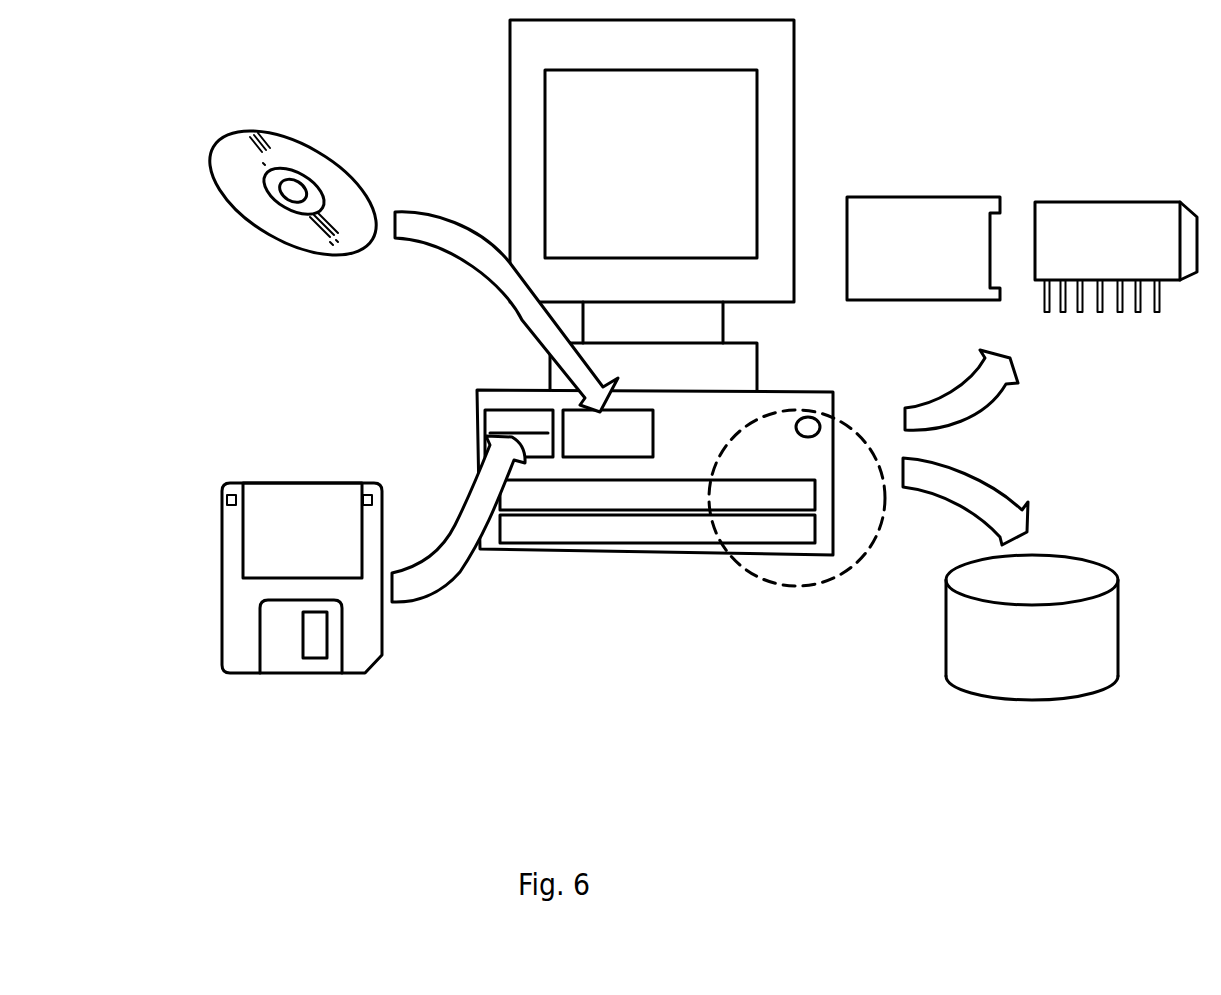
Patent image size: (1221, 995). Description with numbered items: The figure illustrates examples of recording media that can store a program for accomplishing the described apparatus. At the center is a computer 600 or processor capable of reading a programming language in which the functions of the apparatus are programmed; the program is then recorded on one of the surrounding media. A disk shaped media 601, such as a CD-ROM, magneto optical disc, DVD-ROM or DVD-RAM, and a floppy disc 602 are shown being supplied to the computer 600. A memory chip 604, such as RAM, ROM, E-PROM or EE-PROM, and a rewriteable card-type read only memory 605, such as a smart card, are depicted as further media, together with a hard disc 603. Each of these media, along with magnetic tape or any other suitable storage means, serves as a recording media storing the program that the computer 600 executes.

The computer 600 is at (510, 60).
The disk shaped media 601 is at (221, 143).
The floppy disc 602 is at (222, 507).
The hard disc 603 is at (1122, 649).
The memory chip 604 is at (1148, 203).
The rewriteable card-type read only memory 605 is at (960, 197).